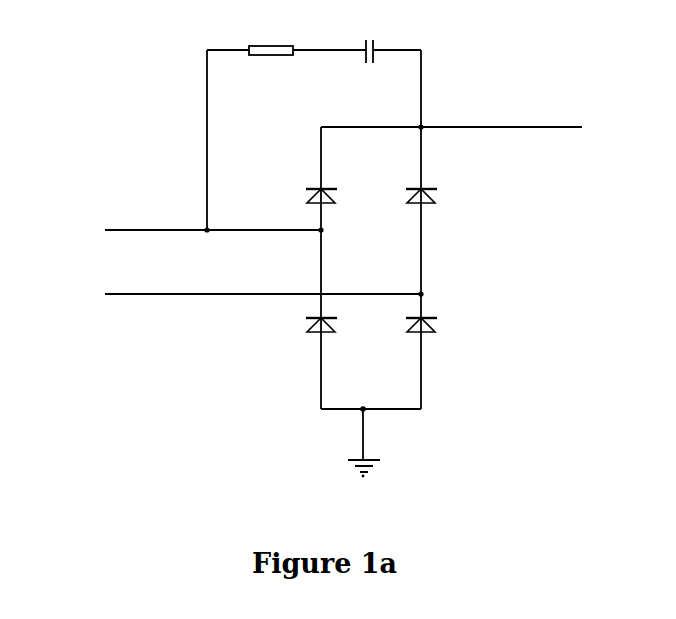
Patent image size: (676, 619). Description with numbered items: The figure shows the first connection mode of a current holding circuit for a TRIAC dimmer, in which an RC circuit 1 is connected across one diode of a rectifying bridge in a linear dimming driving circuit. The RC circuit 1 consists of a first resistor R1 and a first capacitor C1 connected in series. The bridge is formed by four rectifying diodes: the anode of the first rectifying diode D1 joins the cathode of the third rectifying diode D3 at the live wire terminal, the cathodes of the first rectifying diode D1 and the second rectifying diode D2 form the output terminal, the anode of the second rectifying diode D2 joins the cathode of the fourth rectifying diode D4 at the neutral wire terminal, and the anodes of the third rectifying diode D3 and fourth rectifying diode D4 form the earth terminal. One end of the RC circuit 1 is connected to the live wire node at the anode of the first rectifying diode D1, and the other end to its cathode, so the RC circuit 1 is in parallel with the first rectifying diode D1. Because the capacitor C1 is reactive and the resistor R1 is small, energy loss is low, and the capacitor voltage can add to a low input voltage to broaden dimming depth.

The RC circuit 1 is at (310, 263).
The first resistor R1 is at (271, 32).
The first capacitor C1 is at (378, 36).
The first rectifying diode D1 is at (299, 197).
The second rectifying diode D2 is at (442, 197).
The third rectifying diode D3 is at (297, 327).
The fourth rectifying diode D4 is at (443, 327).